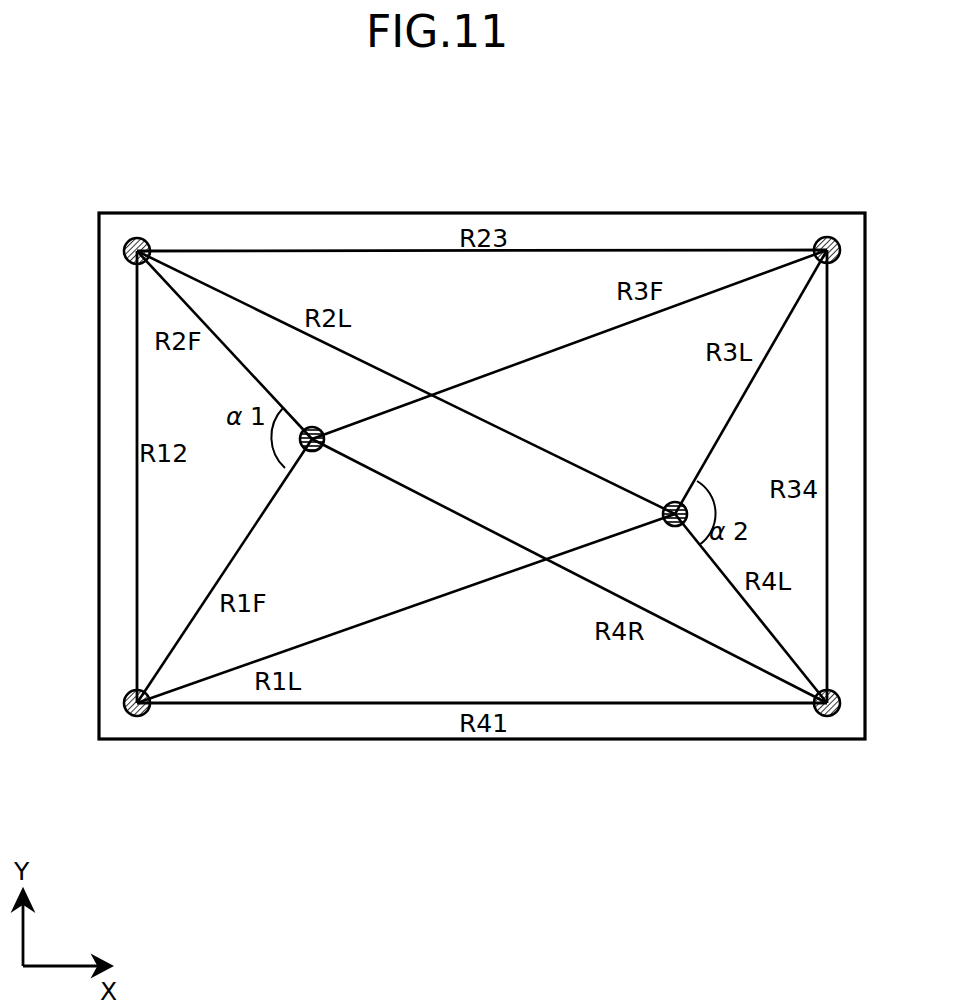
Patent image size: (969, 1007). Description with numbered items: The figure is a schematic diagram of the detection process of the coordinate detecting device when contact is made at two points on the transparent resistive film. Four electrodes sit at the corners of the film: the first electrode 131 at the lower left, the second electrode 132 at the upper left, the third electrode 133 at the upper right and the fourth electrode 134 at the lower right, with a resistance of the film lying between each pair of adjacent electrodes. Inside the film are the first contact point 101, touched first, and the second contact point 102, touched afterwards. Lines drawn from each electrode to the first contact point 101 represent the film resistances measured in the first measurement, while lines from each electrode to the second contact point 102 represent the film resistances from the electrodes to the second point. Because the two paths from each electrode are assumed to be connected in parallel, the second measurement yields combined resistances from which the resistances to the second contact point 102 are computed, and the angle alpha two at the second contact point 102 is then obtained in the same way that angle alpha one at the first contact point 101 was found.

The first contact point 101 is at (315, 452).
The second contact point 102 is at (666, 506).
The first electrode 131 is at (126, 714).
The second electrode 132 is at (128, 240).
The third electrode 133 is at (818, 240).
The fourth electrode 134 is at (820, 715).